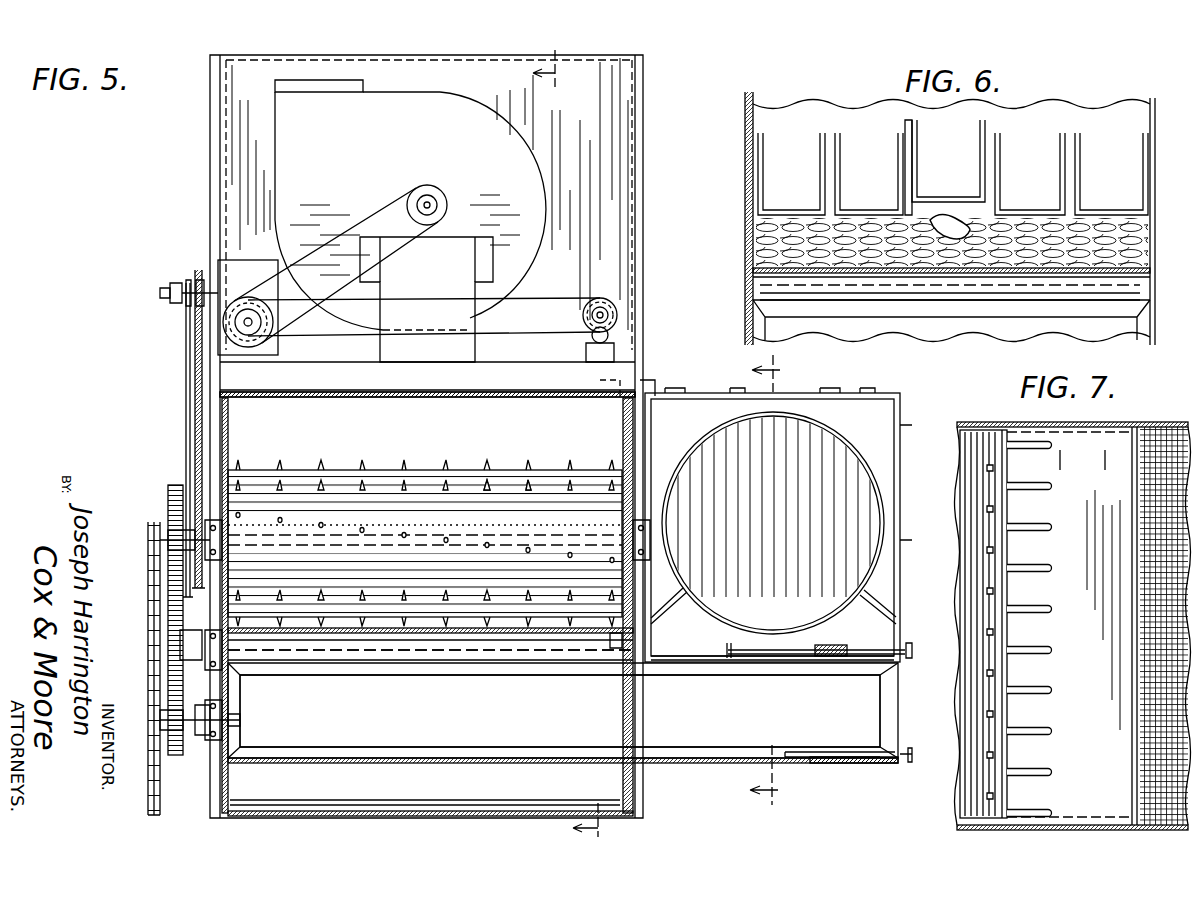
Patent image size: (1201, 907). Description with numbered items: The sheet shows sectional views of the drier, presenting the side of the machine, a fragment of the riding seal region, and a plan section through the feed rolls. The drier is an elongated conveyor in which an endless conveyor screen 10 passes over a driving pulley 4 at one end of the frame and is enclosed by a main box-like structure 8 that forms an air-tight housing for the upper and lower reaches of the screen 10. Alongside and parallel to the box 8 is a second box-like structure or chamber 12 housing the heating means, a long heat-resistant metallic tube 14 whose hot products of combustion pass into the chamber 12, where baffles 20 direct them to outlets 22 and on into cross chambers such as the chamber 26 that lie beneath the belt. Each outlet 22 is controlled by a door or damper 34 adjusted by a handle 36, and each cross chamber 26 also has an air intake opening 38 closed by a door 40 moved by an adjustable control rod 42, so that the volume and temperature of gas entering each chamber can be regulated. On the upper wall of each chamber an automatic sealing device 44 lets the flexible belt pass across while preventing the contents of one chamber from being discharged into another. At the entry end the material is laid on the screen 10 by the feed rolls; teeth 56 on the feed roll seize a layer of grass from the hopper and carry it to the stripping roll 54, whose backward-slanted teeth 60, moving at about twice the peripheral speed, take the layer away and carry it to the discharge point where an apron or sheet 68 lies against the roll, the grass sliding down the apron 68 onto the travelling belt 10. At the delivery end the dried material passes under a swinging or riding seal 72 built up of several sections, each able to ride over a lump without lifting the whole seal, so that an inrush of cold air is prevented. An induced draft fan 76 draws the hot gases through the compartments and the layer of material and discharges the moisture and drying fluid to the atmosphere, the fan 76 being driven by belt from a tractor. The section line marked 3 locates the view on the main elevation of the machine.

In FIG. 5, the section line 3- 3 is at (580, 446).
In FIG. 5, the driving pulley 4 is at (778, 580).
In FIG. 5, the main box-like structure 8 is at (490, 420).
In FIG. 6, the main box-like structure 8 is at (762, 325).
In FIG. 5, the conveyor screen 10 is at (378, 812).
In FIG. 6, the conveyor screen 10 is at (1040, 273).
In FIG. 7, the conveyor screen 10 is at (1157, 450).
In FIG. 5, the box-like structure or chamber 12 is at (865, 422).
In FIG. 5, the heat-resistant metallic tube 14 is at (880, 485).
In FIG. 5, the baffles 20 is at (848, 604).
In FIG. 5, the outlets 22 is at (783, 667).
In FIG. 5, the cross chamber 26 is at (682, 737).
In FIG. 5, the door or damper 34 is at (847, 652).
In FIG. 5, the handle 36 is at (908, 658).
In FIG. 5, the air intake opening 38 is at (822, 768).
In FIG. 5, the door 40 is at (810, 757).
In FIG. 5, the adjustable control rod 42 is at (908, 757).
In FIG. 5, the automatic sealing device 44 is at (570, 688).
In FIG. 6, the automatic sealing device 44 is at (872, 290).
In FIG. 5, the stripping roll 54 is at (357, 459).
In FIG. 7, the stripping roll 54 is at (995, 506).
In FIG. 5, the teeth 56 is at (573, 488).
In FIG. 7, the teeth 60 is at (988, 570).
In FIG. 7, the apron or sheet 68 is at (1082, 544).
In FIG. 6, the swinging or riding seal 72 is at (953, 167).
In FIG. 5, the induced draft fan 76 is at (509, 147).